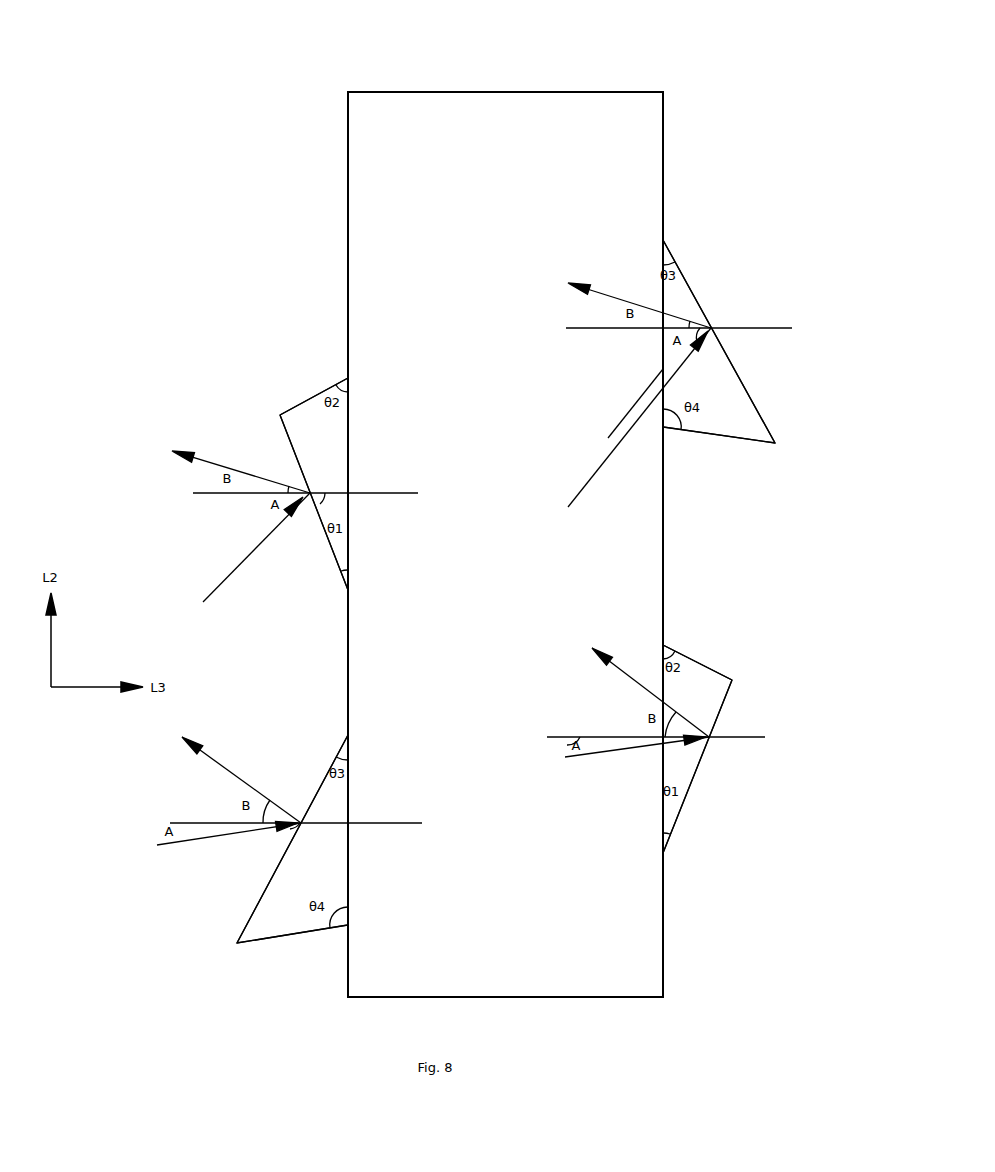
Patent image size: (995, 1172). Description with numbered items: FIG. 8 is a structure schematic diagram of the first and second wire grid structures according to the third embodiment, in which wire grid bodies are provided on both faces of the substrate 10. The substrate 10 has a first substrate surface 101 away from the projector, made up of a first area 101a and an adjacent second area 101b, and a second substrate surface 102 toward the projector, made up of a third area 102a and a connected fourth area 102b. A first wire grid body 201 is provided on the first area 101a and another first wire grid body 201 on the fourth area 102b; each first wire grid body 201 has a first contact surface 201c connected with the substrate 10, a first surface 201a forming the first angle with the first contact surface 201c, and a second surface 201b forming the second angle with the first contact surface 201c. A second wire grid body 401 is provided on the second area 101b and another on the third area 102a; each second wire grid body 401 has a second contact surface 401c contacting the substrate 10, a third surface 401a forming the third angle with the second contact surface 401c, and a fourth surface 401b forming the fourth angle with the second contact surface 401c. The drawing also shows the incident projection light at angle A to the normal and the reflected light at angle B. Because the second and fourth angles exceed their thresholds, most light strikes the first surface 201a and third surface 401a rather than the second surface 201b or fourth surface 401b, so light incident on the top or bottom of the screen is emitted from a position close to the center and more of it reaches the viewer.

The substrate 10 is at (453, 133).
The first substrate surface 101 is at (672, 520).
The first area 101a is at (663, 647).
The second area 101b is at (608, 386).
The second substrate surface 102 is at (467, 673).
The third area 102a is at (348, 793).
The fourth area 102b is at (350, 525).
The first wire grid body 201 is at (302, 438).
The first surface 201a is at (327, 548).
The second surface 201b is at (303, 402).
The first contact surface 201c is at (350, 437).
The second wire grid body 401 is at (725, 393).
The third surface 401a is at (700, 300).
The fourth surface 401b is at (722, 437).
The second contact surface 401c is at (662, 355).